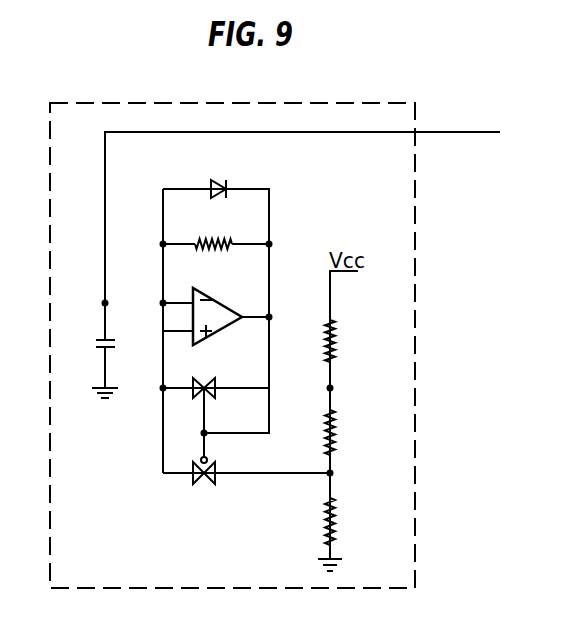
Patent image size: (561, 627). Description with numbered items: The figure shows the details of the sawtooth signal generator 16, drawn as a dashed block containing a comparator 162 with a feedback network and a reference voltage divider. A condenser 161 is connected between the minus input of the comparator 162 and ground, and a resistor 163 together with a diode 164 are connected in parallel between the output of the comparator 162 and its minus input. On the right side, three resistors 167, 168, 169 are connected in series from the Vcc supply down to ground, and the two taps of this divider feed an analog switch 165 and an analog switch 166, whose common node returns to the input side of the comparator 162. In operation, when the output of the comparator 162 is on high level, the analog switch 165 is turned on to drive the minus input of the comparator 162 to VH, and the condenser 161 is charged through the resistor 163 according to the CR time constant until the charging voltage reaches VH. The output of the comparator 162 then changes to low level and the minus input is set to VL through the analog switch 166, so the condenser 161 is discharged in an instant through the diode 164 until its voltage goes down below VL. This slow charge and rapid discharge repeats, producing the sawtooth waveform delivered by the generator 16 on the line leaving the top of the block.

The sawtooth signal generator 16 is at (378, 94).
The condenser 161 is at (111, 340).
The comparator 162 is at (210, 292).
The resistor 163 is at (208, 240).
The diode 164 is at (210, 181).
The analog switch 165 is at (211, 378).
The analog switch 166 is at (210, 487).
The resistor 167 is at (341, 332).
The resistor 168 is at (341, 430).
The resistor 169 is at (341, 520).